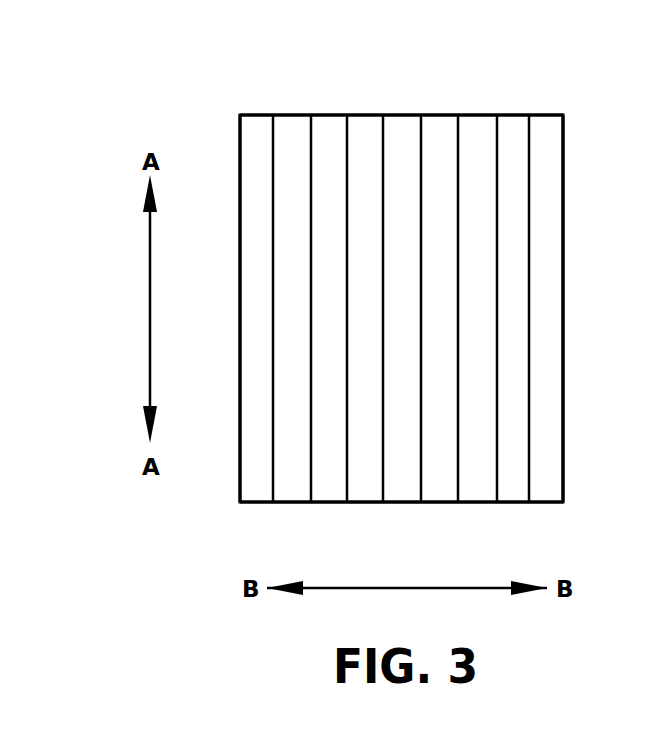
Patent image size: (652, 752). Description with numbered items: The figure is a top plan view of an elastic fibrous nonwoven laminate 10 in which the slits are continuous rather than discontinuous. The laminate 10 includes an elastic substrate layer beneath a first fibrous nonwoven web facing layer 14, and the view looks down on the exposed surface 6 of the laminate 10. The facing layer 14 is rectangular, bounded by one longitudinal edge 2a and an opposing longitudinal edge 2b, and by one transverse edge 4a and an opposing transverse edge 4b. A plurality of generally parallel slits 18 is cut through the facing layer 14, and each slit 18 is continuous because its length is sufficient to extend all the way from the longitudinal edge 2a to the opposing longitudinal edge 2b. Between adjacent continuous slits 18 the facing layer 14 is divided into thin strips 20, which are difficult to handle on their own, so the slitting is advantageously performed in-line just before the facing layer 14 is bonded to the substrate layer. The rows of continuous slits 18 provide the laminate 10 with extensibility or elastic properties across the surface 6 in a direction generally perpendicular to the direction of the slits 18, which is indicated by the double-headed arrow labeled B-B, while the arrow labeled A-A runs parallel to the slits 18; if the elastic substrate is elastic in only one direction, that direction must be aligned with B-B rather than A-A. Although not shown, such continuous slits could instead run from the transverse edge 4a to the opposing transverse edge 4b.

The elastic fibrous nonwoven laminate 10 is at (213, 156).
The thin strips 20 is at (330, 145).
The slits 18 is at (498, 140).
The exposed surface 6 is at (547, 157).
The first fibrous nonwoven web facing layer 14 is at (545, 213).
The longitudinal edge 2a is at (404, 115).
The opposing longitudinal edge 2b is at (360, 502).
The transverse edge 4a is at (240, 282).
The opposing transverse edge 4b is at (564, 343).